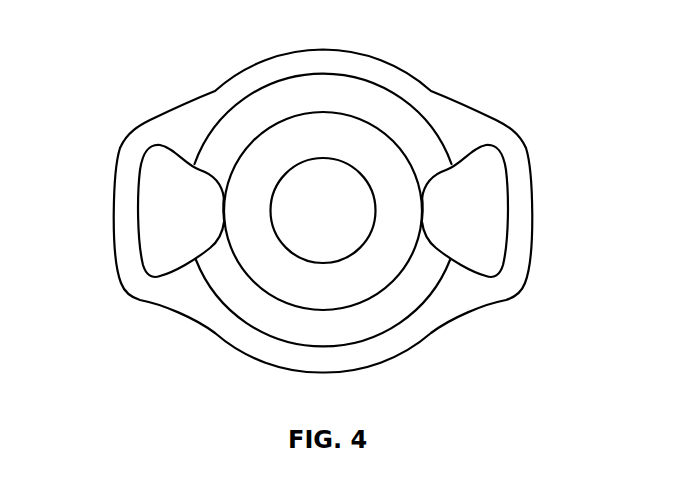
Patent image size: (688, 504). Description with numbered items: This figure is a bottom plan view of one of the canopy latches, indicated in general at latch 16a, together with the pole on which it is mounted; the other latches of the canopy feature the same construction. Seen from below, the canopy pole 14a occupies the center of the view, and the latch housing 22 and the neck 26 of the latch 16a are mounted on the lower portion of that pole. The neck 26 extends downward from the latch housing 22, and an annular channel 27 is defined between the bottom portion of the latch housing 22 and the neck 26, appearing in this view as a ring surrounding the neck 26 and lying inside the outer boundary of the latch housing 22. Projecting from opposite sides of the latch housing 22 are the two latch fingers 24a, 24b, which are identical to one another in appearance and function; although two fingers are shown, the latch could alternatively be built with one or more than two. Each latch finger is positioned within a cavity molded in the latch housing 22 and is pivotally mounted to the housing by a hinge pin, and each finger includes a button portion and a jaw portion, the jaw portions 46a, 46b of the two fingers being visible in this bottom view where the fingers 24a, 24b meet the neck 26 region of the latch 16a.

The latch 16a is at (178, 40).
The latch housing 22 is at (326, 46).
The annular channel 27 is at (392, 112).
The neck 26 is at (280, 283).
The canopy pole 14a is at (348, 223).
The latch finger 24a is at (498, 203).
The latch finger 24b is at (145, 212).
The jaw portion 46a is at (440, 235).
The jaw portion 46b is at (212, 226).